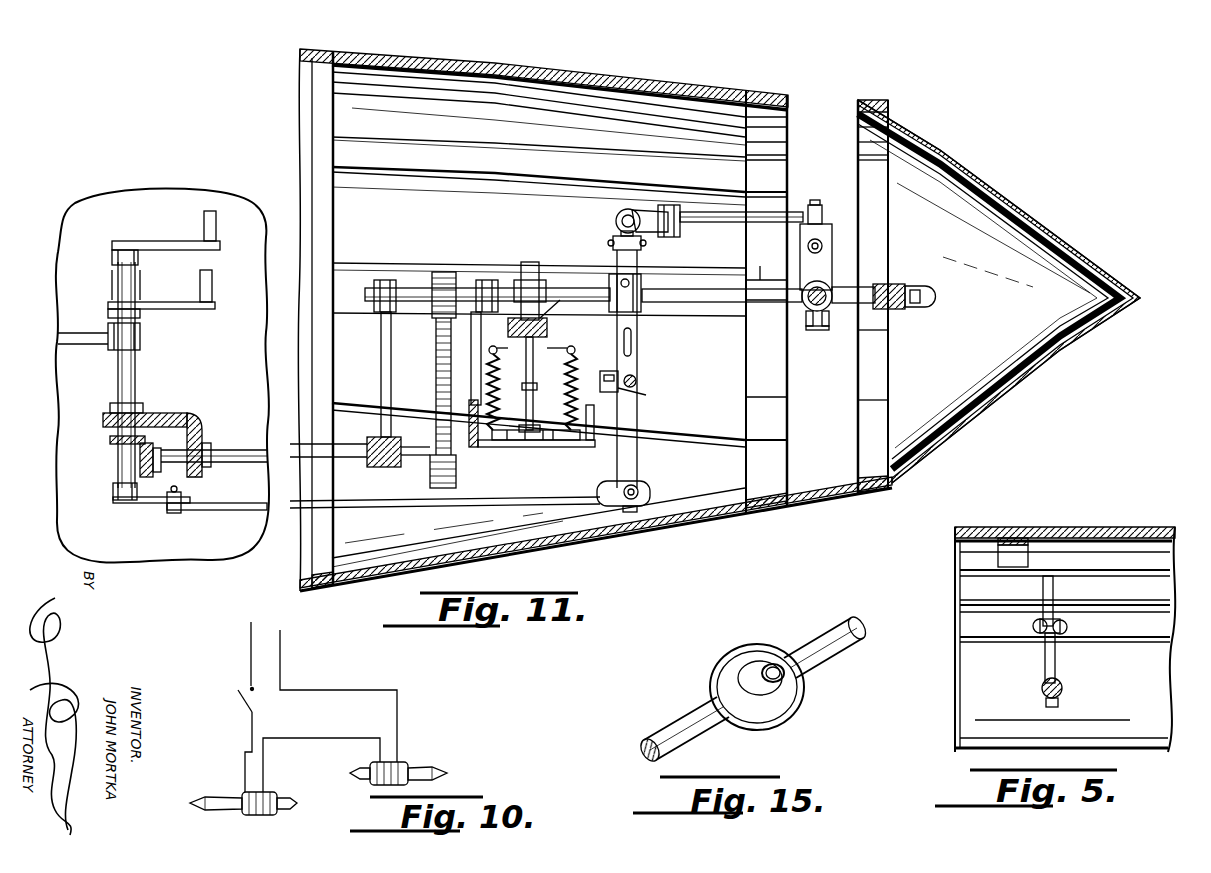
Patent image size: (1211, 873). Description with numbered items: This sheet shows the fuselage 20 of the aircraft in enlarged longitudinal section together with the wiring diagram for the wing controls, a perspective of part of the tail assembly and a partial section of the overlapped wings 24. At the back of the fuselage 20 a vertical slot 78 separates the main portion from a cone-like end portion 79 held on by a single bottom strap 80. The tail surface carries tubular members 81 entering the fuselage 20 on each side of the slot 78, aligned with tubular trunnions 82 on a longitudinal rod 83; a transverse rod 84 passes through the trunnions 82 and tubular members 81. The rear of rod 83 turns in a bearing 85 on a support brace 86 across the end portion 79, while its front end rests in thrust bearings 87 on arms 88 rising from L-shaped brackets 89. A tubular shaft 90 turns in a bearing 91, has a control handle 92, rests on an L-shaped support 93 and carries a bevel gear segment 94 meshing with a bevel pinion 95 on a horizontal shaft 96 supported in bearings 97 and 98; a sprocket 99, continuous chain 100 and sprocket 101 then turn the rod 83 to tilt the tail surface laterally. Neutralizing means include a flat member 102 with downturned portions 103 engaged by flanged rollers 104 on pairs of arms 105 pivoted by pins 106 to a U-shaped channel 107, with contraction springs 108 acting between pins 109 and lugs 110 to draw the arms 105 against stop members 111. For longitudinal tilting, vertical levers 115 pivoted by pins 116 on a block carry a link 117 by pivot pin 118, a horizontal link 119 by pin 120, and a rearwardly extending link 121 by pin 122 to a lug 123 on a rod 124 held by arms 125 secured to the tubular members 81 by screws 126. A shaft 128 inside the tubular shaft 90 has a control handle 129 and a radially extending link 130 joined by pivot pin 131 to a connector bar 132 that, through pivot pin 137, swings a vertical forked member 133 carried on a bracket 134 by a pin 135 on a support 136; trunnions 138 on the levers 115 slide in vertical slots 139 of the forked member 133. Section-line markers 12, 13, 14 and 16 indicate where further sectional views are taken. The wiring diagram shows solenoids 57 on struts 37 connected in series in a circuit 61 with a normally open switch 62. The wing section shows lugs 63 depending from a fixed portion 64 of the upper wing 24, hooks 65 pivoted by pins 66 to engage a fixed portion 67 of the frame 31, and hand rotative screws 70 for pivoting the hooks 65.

In FIG. 11, the fuselage 20 is at (552, 74).
In FIG. 11, the vertical slot 78 is at (846, 122).
In FIG. 11, the cone-like end portion 79 is at (999, 291).
In FIG. 11, the strap 80 is at (830, 484).
In FIG. 11, the tubular members 81 is at (826, 285).
In FIG. 11, the rod 83 is at (722, 304).
In FIG. 15, the rod 83 is at (856, 642).
In FIG. 11, the rod 84 is at (806, 306).
In FIG. 11, the bearing 85 is at (932, 292).
In FIG. 11, the support brace 86 is at (890, 284).
In FIG. 11, the bearings 87 is at (383, 279).
In FIG. 11, the arms 88 is at (380, 353).
In FIG. 11, the L-shaped brackets 89 is at (376, 439).
In FIG. 11, the tubular shaft 90 is at (136, 386).
In FIG. 11, the bearing 91 is at (142, 339).
In FIG. 11, the control handle 92 is at (212, 302).
In FIG. 11, the L-shaped support 93 is at (112, 445).
In FIG. 11, the bevel gear segment 94 is at (172, 411).
In FIG. 11, the bevel pinion 95 is at (203, 431).
In FIG. 11, the horizontal shaft 96 is at (238, 465).
In FIG. 11, the bearing 97 is at (154, 475).
In FIG. 11, the bearing 98 is at (380, 466).
In FIG. 11, the sprocket 99 is at (456, 479).
In FIG. 11, the continuous chain 100 is at (434, 341).
In FIG. 11, the sprocket 101 is at (444, 271).
In FIG. 11, the flat member 102 is at (529, 262).
In FIG. 11, the downturned portions 103 is at (547, 331).
In FIG. 11, the flanged rollers 104 is at (556, 300).
In FIG. 11, the arms 105 is at (528, 379).
In FIG. 11, the pins 106 is at (560, 432).
In FIG. 11, the U-shaped channel 107 is at (555, 450).
In FIG. 11, the contraction springs 108 is at (486, 397).
In FIG. 11, the pins 109 is at (494, 347).
In FIG. 11, the lugs 110 is at (536, 434).
In FIG. 11, the stop members 111 is at (520, 387).
In FIG. 11, the vertical levers 115 is at (640, 306).
In FIG. 11, the pins 116 is at (642, 280).
In FIG. 11, the link 117 is at (629, 208).
In FIG. 11, the pivot pin 118 is at (644, 251).
In FIG. 11, the horizontal link 119 is at (681, 213).
In FIG. 11, the pin 120 is at (616, 224).
In FIG. 11, the rearwardly extending link 121 is at (736, 223).
In FIG. 11, the pin 122 is at (667, 204).
In FIG. 11, the lug 123 is at (828, 225).
In FIG. 11, the rod 124 is at (807, 249).
In FIG. 11, the arms 125 is at (806, 269).
In FIG. 11, the screws 126 is at (830, 329).
In FIG. 11, the shaft 128 is at (118, 283).
In FIG. 11, the control handle 129 is at (160, 241).
In FIG. 11, the radially extending link 130 is at (131, 503).
In FIG. 11, the pivot pin 131 is at (168, 514).
In FIG. 11, the connector bar 132 is at (222, 512).
In FIG. 11, the vertical forked member 133 is at (640, 466).
In FIG. 11, the bracket 134 is at (637, 384).
In FIG. 11, the pin 135 is at (644, 375).
In FIG. 11, the support 136 is at (640, 397).
In FIG. 11, the pivot pin 137 is at (650, 491).
In FIG. 11, the trunnion 138 is at (632, 335).
In FIG. 11, the vertical slot 139 is at (633, 351).
In FIG. 11, the section line 12 is at (544, 250).
In FIG. 11, the section line 13 is at (630, 208).
In FIG. 11, the section line 14 is at (880, 65).
In FIG. 11, the section line 16 is at (72, 408).
In FIG. 10, the struts 37 is at (204, 796).
In FIG. 10, the solenoids 57 is at (244, 793).
In FIG. 10, the circuit 61 is at (348, 689).
In FIG. 10, the switch 62 is at (238, 700).
In FIG. 15, the tubular trunnions 82 is at (765, 664).
In FIG. 5, the wings 24 is at (1157, 626).
In FIG. 5, the frame 31 is at (982, 721).
In FIG. 5, the lugs 63 is at (1042, 583).
In FIG. 5, the fixed portion 64 is at (1073, 574).
In FIG. 5, the hooks 65 is at (1058, 666).
In FIG. 5, the pins 66 is at (1067, 628).
In FIG. 5, the fixed portion 67 is at (1180, 688).
In FIG. 5, the hand rotative screws 70 is at (1063, 696).